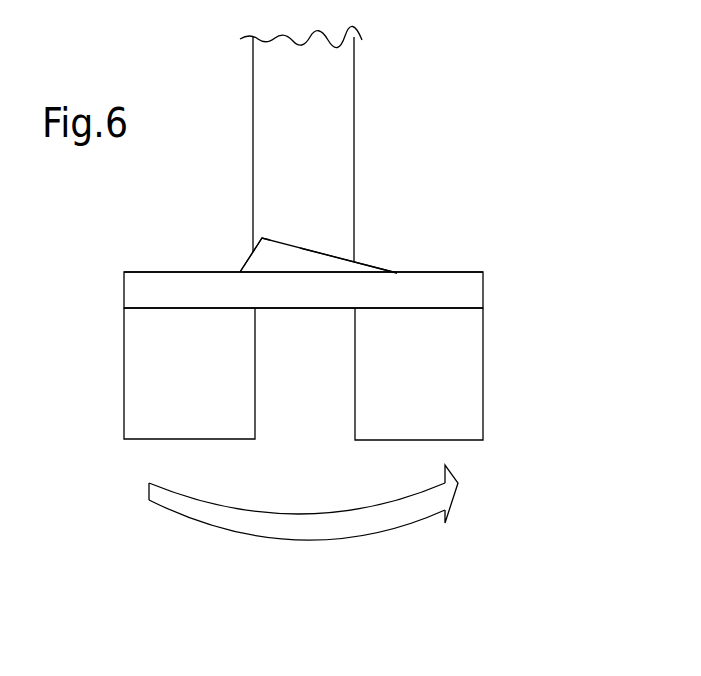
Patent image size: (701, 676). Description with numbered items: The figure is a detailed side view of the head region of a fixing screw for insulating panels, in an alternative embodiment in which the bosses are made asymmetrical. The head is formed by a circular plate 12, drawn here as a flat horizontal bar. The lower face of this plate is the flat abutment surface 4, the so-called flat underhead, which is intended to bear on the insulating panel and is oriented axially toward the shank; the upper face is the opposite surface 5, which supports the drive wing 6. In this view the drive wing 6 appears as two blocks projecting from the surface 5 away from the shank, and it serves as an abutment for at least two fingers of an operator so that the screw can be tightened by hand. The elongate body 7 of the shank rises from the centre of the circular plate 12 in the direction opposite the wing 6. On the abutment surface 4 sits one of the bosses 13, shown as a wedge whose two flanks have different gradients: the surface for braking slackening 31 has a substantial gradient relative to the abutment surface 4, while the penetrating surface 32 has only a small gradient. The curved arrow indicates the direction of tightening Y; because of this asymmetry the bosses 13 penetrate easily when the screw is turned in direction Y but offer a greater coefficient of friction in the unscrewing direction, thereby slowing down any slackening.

The flat abutment surface 4 is at (152, 272).
The surface opposite the abutment surface 5 is at (448, 308).
The drive wing 6 is at (175, 373).
The elongate body 7 is at (355, 110).
The circular plate 12 is at (458, 290).
The bosses 13 is at (300, 245).
The surface for braking slackening 31 is at (248, 256).
The penetrating surface 32 is at (333, 263).
The direction of tightening Y is at (308, 527).